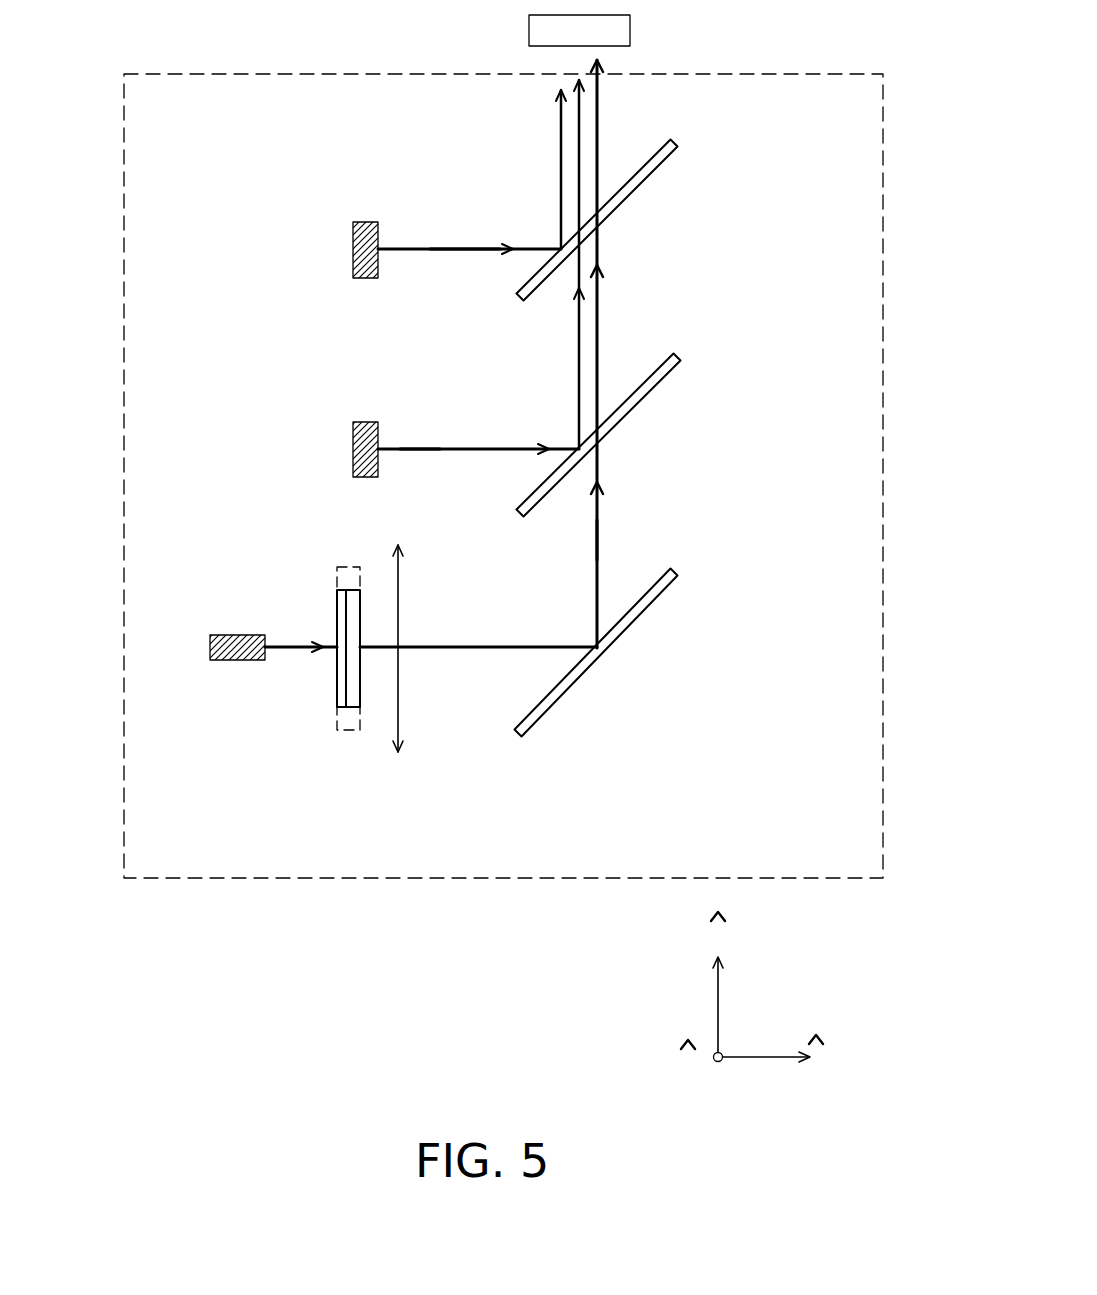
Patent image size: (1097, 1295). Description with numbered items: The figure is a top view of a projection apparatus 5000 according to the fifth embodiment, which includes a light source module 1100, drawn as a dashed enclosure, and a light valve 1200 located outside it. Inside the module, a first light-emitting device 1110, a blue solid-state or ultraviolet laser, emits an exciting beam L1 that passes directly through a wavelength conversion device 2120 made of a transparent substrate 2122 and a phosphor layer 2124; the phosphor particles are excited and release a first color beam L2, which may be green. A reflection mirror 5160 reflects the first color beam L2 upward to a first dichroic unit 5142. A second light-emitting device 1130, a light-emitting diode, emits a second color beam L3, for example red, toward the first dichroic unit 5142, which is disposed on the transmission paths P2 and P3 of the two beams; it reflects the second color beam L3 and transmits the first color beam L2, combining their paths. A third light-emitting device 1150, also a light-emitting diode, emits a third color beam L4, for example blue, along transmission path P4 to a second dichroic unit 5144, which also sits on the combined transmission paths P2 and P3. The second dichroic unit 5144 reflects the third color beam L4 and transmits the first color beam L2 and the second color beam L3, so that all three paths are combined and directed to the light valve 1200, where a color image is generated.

The projection apparatus 5000 is at (777, 1178).
The light source module 1100 is at (500, 880).
The light valve 1200 is at (610, 28).
The first light-emitting device 1110 is at (218, 648).
The second light-emitting device 1130 is at (358, 450).
The third light-emitting device 1150 is at (358, 250).
The wavelength conversion device 2120 is at (436, 710).
The transparent substrate 2122 is at (343, 692).
The phosphor layer 2124 is at (357, 687).
The reflection mirror 5160 is at (673, 595).
The first dichroic unit 5142 is at (680, 357).
The second dichroic unit 5144 is at (677, 140).
The exciting beam L1 is at (306, 650).
The first color beam L2 is at (595, 563).
The second color beam L3 is at (480, 452).
The third color beam L4 is at (420, 247).
The transmission path of the first color beam P2 is at (598, 538).
The transmission path of the second color beam P3 is at (420, 453).
The transmission path of the third color beam P4 is at (462, 246).